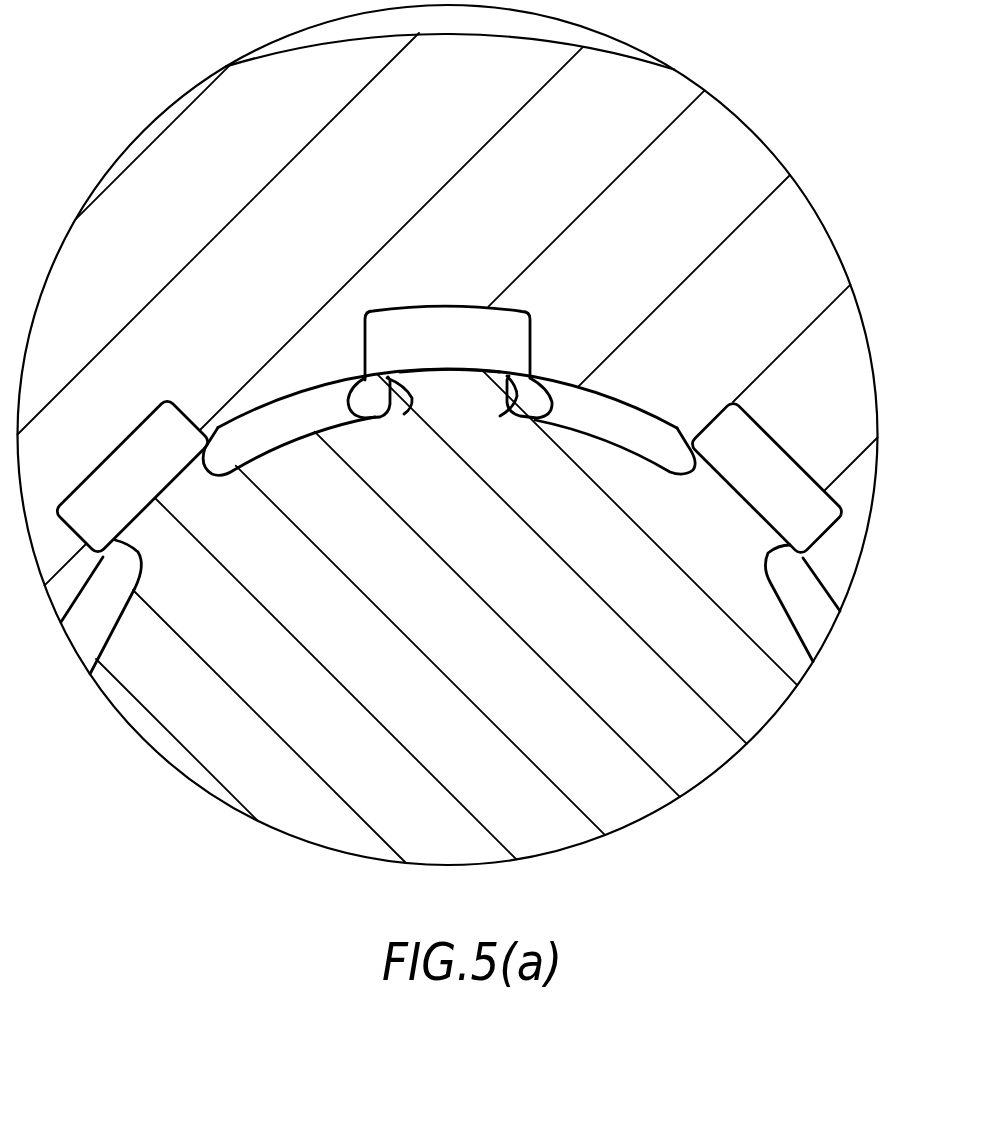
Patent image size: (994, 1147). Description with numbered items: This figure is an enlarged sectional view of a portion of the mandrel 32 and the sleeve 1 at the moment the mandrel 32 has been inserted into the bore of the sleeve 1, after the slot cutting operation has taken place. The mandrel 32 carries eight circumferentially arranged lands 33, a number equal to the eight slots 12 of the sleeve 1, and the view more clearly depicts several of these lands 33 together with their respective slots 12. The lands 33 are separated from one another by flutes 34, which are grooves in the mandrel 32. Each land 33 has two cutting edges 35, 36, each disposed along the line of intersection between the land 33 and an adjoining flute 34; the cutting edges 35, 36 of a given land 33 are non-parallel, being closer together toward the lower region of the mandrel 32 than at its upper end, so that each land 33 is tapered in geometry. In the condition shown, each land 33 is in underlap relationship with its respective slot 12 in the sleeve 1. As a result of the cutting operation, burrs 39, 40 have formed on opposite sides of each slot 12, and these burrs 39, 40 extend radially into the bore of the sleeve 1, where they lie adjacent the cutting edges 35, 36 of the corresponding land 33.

The sleeve 1 is at (727, 150).
The slot 12 is at (505, 320).
The mandrel 32 is at (703, 756).
The land 33 is at (433, 380).
The flute 34 is at (287, 407).
The cutting edge 35 is at (500, 416).
The cutting edge 36 is at (404, 414).
The burr 39 is at (542, 420).
The burr 40 is at (347, 420).